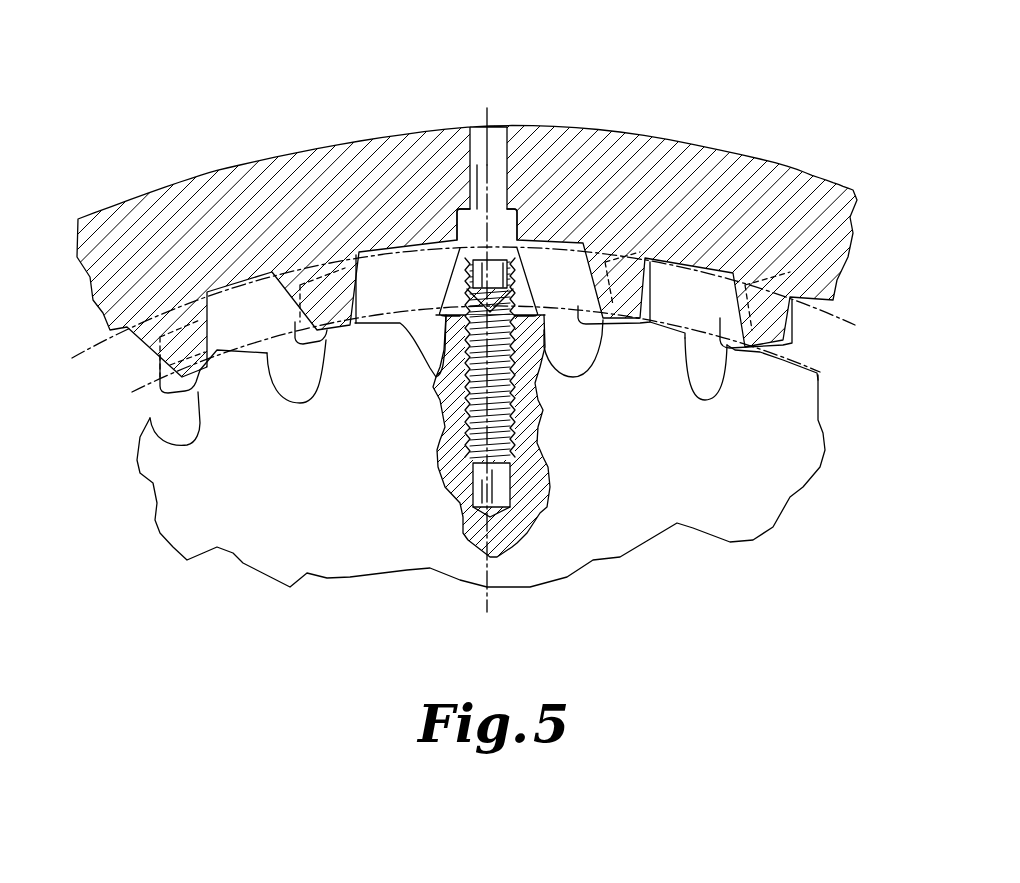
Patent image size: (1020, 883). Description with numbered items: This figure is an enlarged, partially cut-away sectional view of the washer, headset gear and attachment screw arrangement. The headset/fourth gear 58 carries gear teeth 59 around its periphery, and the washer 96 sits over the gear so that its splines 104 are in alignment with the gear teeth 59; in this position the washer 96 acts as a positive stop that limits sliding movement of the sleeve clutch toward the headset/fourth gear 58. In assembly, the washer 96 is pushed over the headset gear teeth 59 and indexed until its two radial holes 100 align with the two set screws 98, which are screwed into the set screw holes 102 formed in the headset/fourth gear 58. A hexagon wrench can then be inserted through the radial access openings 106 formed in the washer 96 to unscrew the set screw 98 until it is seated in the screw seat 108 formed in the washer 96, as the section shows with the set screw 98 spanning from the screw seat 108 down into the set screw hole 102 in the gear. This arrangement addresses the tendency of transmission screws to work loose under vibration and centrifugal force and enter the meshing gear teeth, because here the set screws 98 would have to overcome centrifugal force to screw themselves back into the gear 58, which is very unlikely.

The headset/fourth gear 58 is at (185, 478).
The headset gear teeth 59 is at (222, 347).
The washer 96 is at (633, 167).
The set screw 98 is at (500, 445).
The radial holes 100 is at (517, 210).
The set screw holes 102 is at (497, 488).
The splines 104 is at (267, 353).
The radial access openings 106 is at (494, 165).
The screw seats 108 is at (457, 208).